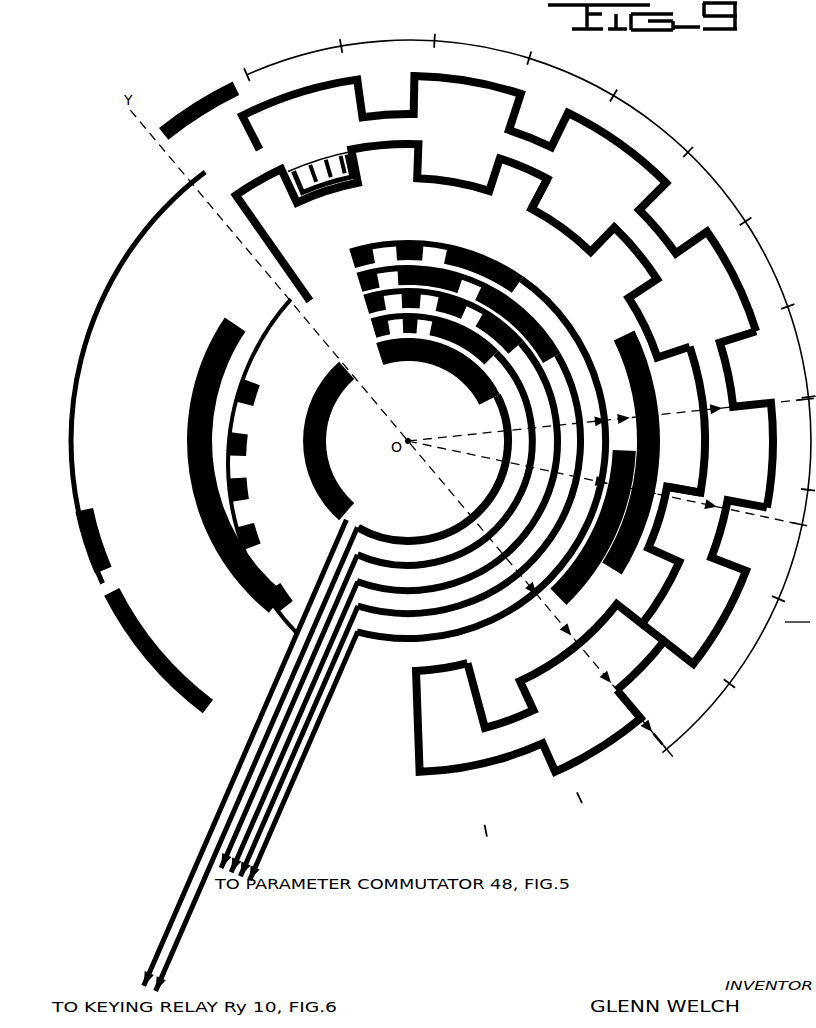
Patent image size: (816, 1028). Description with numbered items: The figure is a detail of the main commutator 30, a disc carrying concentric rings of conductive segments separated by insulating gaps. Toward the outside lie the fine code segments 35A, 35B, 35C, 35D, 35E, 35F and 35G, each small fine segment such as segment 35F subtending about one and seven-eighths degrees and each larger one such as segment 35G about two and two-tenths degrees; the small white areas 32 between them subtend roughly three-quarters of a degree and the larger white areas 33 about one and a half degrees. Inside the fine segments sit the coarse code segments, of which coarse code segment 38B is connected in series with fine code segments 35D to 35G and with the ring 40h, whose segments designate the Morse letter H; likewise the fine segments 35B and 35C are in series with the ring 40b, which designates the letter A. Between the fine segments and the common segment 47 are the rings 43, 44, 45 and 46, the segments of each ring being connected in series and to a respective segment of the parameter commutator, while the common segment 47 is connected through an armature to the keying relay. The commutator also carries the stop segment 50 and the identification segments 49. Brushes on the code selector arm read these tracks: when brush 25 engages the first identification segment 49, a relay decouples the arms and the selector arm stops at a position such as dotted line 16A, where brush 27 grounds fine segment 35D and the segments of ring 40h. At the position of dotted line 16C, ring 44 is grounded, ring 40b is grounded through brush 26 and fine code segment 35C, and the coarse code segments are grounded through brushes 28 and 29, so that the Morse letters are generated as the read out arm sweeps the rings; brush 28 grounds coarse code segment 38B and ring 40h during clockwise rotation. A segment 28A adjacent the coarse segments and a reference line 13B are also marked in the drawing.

The stop segment 50 is at (199, 103).
The larger white areas 33 is at (320, 147).
The small white areas 32 is at (323, 186).
The fine code segment 35G is at (392, 222).
The fine code segment 35C is at (504, 383).
The fine code segment 35F is at (612, 268).
The fine code segment 35E is at (688, 420).
The fine code segment 35B is at (746, 419).
The fine code segment 35D is at (584, 607).
The fine code segment 35A is at (528, 717).
The coarse code segment 38B is at (625, 449).
The ring 46 is at (477, 439).
The ring 45 is at (469, 439).
The ring 44 is at (457, 439).
The ring 43 is at (444, 439).
The common segment 47 is at (405, 439).
The ring 40h is at (262, 466).
The ring 40b is at (178, 442).
The brush 29 is at (564, 506).
The brush 28 is at (596, 522).
The contact pad 28A is at (594, 515).
The brush 27 is at (619, 560).
The brush 26 is at (664, 529).
The brush 25 is at (660, 725).
The identification segments 49 is at (642, 746).
The reference line 13B is at (791, 386).
The dotted line 16C is at (788, 534).
The dotted line 16A is at (692, 761).
The main commutator 30 is at (797, 613).